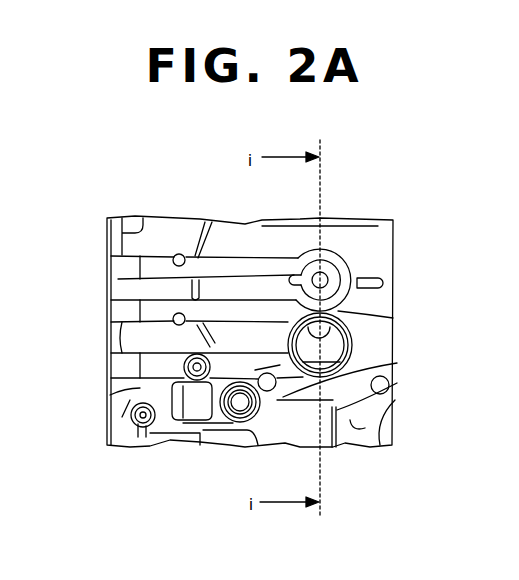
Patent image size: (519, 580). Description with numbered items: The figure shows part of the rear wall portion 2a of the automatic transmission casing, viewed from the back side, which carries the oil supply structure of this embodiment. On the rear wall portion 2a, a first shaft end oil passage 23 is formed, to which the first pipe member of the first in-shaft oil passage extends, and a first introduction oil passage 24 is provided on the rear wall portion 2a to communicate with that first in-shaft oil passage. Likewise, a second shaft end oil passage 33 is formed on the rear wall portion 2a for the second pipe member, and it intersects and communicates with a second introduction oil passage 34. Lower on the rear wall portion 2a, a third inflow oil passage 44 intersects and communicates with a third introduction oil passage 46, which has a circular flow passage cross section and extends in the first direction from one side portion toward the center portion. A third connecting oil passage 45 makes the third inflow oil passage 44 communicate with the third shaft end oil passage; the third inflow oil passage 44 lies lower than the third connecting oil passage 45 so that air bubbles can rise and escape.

The rear wall portion 2a is at (346, 238).
The first shaft end oil passage 23 is at (343, 274).
The first introduction oil passage 24 is at (197, 258).
The second shaft end oil passage 33 is at (338, 311).
The second introduction oil passage 34 is at (158, 306).
The third inflow oil passage 44 is at (350, 348).
The third connecting oil passage 45 is at (332, 343).
The third introduction oil passage 46 is at (390, 393).